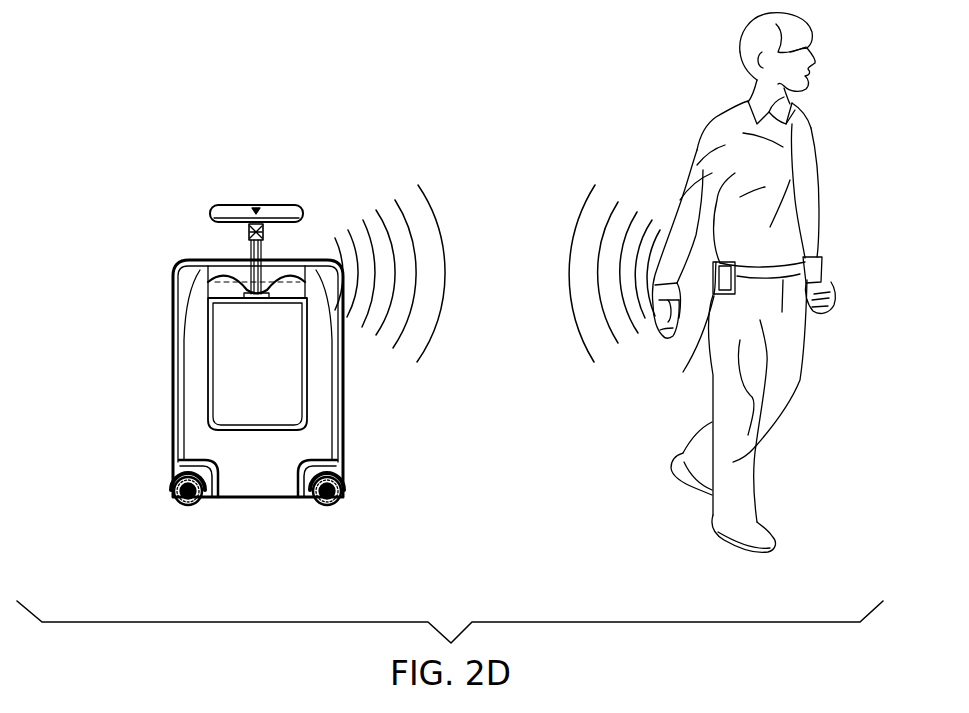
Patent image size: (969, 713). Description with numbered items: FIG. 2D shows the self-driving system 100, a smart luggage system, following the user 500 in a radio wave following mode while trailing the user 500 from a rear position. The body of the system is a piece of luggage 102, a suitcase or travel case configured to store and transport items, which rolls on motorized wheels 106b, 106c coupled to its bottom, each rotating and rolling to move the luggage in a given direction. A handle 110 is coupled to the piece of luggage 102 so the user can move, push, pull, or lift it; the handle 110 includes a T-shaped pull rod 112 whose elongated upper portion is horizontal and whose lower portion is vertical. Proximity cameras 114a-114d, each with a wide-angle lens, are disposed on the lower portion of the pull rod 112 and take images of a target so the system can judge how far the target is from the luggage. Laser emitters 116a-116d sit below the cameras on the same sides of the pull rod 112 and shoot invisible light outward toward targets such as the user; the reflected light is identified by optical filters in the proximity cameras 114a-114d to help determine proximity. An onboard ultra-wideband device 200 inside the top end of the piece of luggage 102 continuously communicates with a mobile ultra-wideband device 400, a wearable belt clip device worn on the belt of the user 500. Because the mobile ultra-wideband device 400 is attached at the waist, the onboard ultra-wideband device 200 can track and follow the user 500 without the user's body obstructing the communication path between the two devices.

The self-driving system 100 is at (495, 65).
The handle 110 is at (133, 158).
The pull rod 112 is at (275, 208).
The proximity cameras 114a-114d is at (250, 233).
The laser emitters 116a-116d is at (248, 242).
The onboard ultra-wideband device 200 is at (225, 270).
The piece of luggage 102 is at (172, 430).
The motorized wheel 106b is at (188, 510).
The motorized wheel 106c is at (322, 510).
The mobile ultra-wideband device 400 is at (688, 362).
The user 500 is at (715, 118).